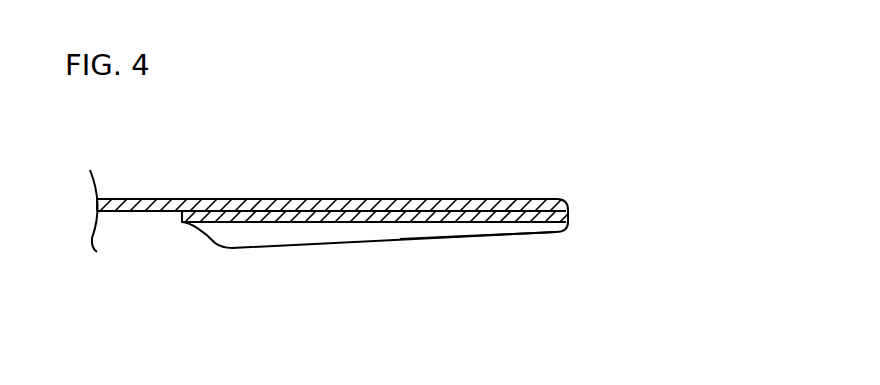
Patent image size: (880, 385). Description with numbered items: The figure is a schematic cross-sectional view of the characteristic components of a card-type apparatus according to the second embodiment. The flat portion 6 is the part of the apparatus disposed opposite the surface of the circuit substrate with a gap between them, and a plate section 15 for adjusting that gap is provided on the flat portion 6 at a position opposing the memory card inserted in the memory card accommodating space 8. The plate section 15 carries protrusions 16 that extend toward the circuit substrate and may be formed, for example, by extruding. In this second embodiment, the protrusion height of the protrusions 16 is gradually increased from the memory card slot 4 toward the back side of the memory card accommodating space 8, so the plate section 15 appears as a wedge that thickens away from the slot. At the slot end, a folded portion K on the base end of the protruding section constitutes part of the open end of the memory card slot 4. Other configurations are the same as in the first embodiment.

The flat portion 6 is at (404, 198).
The plate section 15 is at (191, 228).
The protrusions 16 is at (307, 233).
The folded portion K is at (572, 201).
The memory card slot 4 is at (562, 252).
The memory card accommodating space 8 is at (207, 267).